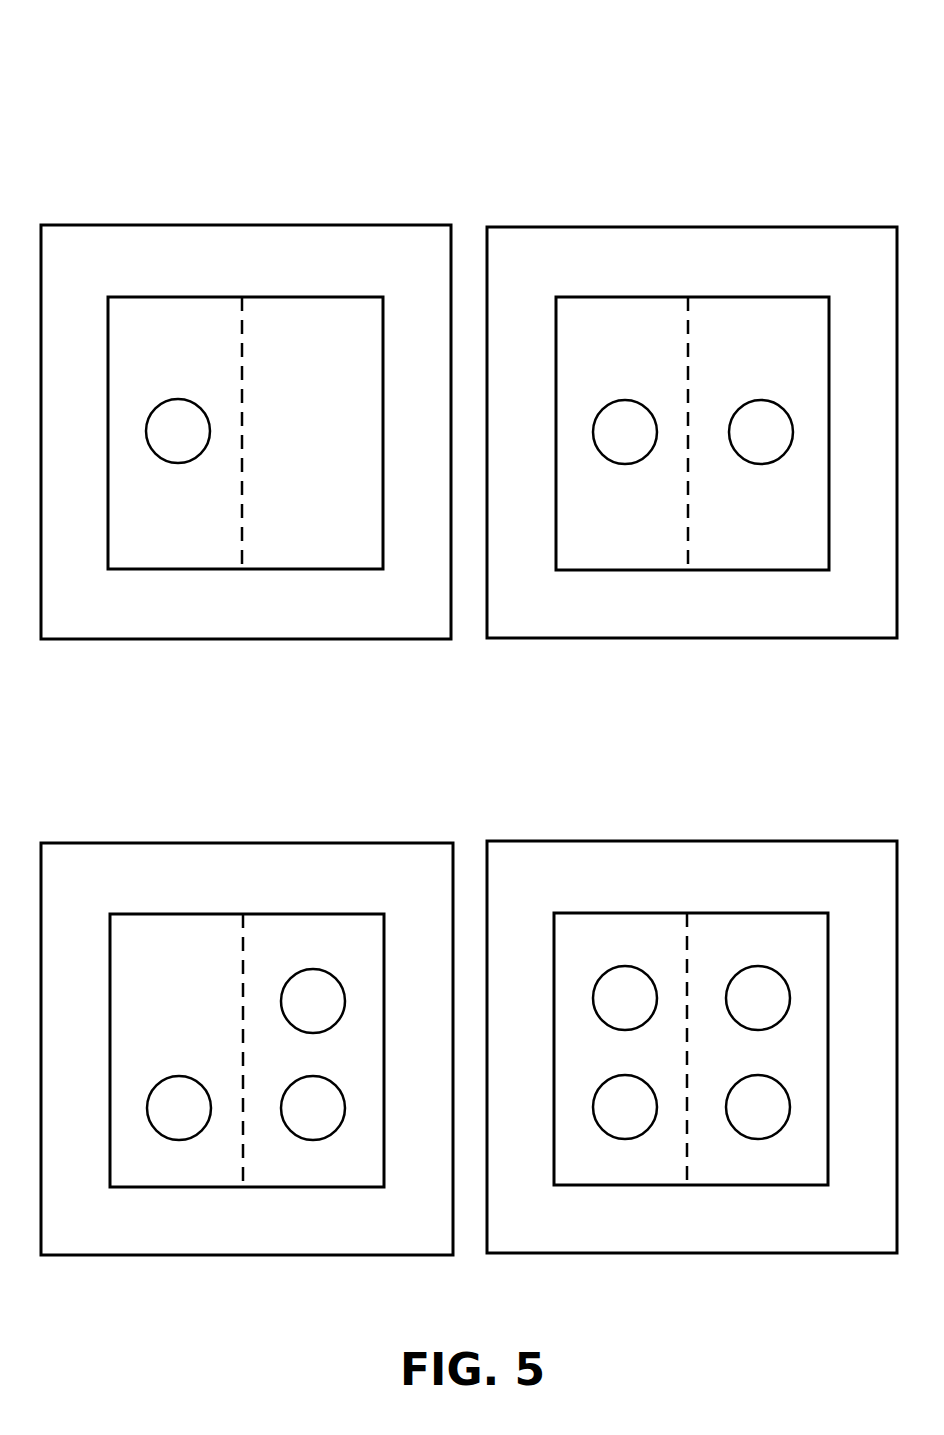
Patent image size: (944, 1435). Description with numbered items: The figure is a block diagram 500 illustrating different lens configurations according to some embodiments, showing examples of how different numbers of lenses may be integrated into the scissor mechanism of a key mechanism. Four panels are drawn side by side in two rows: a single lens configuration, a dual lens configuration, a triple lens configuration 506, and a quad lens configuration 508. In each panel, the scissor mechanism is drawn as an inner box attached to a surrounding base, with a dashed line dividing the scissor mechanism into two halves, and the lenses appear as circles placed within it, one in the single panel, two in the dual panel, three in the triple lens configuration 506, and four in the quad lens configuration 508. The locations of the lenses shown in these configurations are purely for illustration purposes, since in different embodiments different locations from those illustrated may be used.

The block diagram 500 is at (96, 43).
The triple lens configuration 506 is at (451, 822).
The quad lens configuration 508 is at (897, 826).